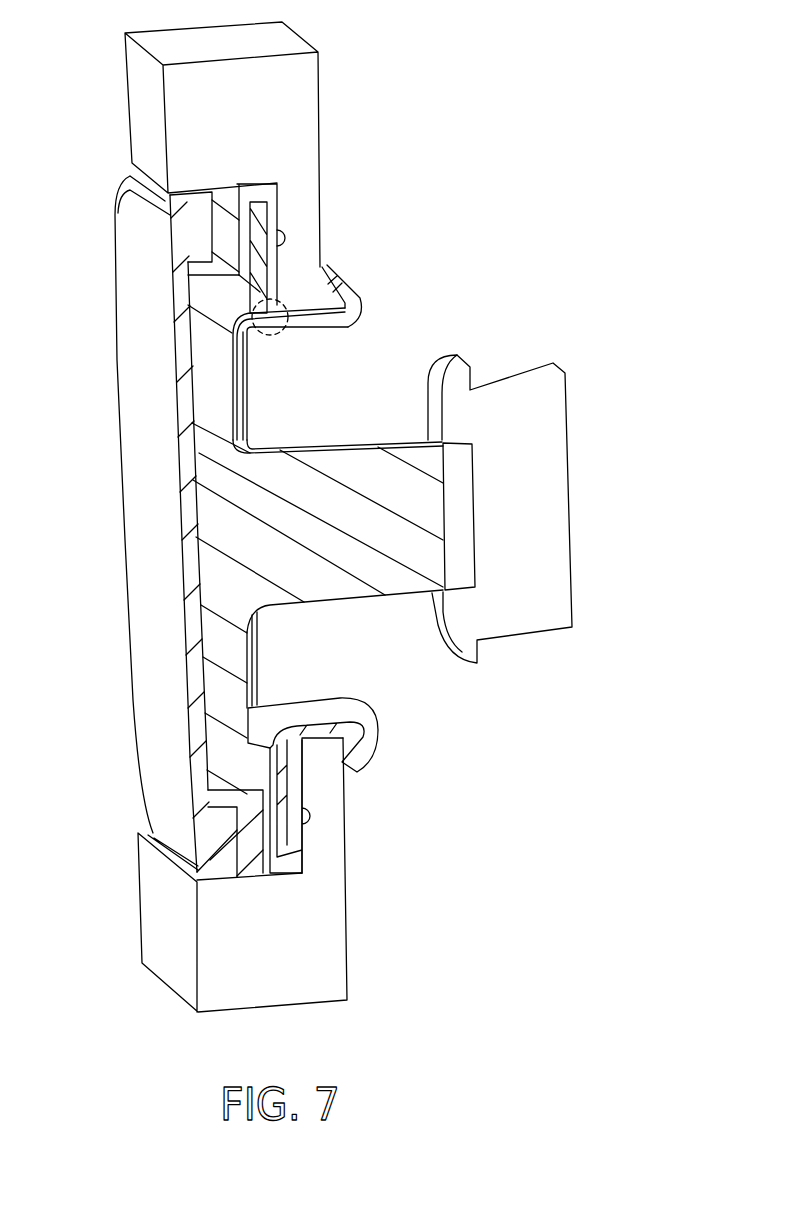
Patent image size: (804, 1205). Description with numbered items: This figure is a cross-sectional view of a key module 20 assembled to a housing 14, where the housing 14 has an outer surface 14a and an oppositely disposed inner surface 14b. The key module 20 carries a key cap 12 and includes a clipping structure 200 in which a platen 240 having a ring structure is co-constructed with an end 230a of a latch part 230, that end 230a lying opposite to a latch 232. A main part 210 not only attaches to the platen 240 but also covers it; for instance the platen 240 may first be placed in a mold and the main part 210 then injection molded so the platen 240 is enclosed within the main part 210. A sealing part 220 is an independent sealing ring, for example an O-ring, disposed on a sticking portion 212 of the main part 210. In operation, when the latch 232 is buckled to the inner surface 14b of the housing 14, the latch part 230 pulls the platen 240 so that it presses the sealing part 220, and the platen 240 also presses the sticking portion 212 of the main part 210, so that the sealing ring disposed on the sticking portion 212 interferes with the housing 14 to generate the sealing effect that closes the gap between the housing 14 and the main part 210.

The key module 20 is at (492, 113).
The clipping structure 200 is at (257, 173).
The main part 210 is at (265, 545).
The sticking portion 212 is at (297, 793).
The sealing part 220 is at (285, 232).
The latch part 230 is at (313, 322).
The end of the latch part 230a is at (278, 336).
The latch 232 is at (330, 285).
The platen 240 is at (262, 222).
The key cap 12 is at (135, 291).
The housing 14 is at (325, 961).
The outer surface 14a is at (296, 852).
The inner surface 14b is at (350, 863).